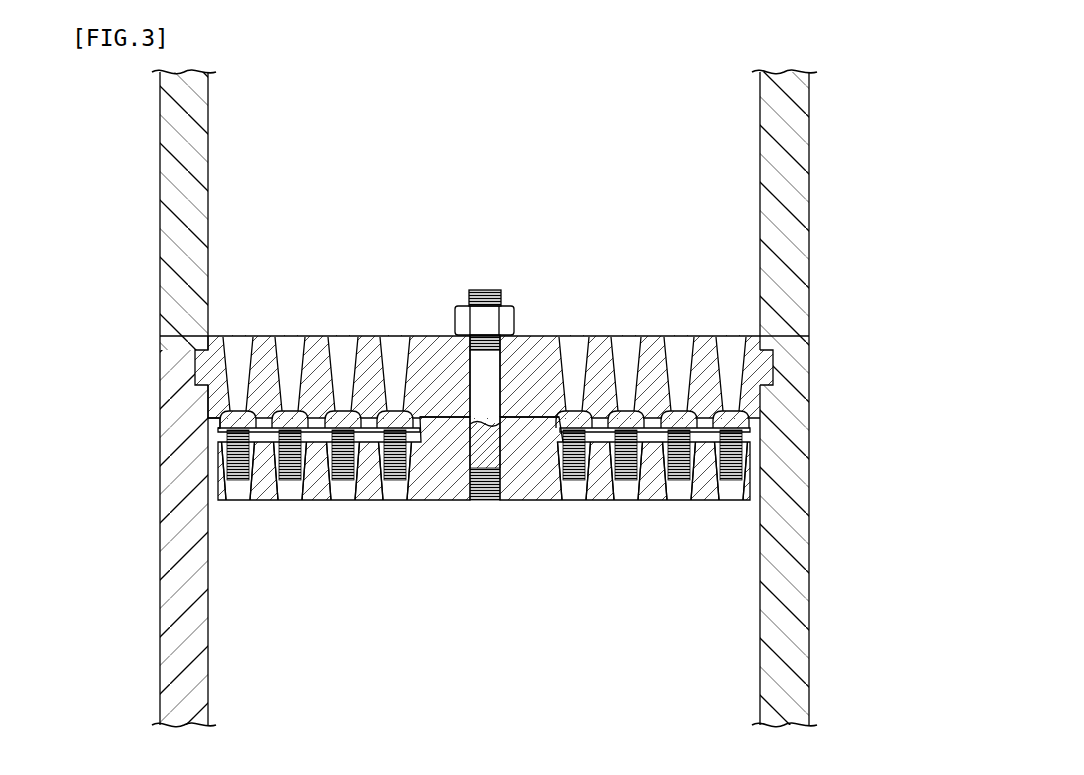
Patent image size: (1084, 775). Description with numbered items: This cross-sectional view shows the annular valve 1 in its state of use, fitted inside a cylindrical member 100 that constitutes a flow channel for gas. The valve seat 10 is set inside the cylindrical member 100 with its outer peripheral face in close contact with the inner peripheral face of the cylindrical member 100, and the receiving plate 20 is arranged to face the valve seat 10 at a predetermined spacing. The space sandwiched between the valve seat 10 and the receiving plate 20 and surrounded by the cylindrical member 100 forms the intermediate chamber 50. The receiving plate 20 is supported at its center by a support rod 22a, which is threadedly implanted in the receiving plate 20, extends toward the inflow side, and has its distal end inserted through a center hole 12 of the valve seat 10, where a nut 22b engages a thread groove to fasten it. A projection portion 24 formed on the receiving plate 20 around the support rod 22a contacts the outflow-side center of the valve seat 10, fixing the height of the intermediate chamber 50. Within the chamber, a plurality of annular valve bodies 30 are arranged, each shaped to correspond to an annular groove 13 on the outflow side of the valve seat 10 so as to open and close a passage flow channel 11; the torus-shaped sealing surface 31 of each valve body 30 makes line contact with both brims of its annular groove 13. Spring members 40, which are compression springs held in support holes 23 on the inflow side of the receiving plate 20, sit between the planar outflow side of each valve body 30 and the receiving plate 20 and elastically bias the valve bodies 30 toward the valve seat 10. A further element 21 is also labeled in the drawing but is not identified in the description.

The annular valve 1 is at (543, 197).
The valve seat 10 is at (660, 336).
The passage flow channel 11 is at (290, 362).
The center hole 12 is at (481, 395).
The annular groove 13 is at (237, 417).
The receiving plate 20 is at (388, 500).
The bolts 21 is at (484, 491).
The support rod 22a is at (472, 368).
The nut 22b is at (492, 320).
The support hole 23 is at (303, 478).
The projection portion 24 is at (518, 422).
The valve body 30 is at (745, 428).
The sealing surface 31 is at (752, 395).
The spring member 40 is at (291, 468).
The intermediate chamber 50 is at (214, 427).
The cylindrical member 100 is at (793, 245).